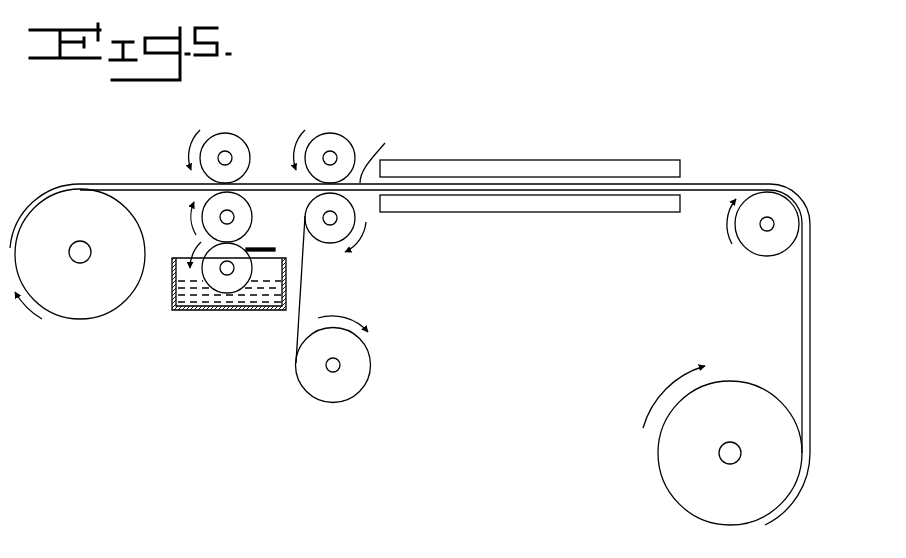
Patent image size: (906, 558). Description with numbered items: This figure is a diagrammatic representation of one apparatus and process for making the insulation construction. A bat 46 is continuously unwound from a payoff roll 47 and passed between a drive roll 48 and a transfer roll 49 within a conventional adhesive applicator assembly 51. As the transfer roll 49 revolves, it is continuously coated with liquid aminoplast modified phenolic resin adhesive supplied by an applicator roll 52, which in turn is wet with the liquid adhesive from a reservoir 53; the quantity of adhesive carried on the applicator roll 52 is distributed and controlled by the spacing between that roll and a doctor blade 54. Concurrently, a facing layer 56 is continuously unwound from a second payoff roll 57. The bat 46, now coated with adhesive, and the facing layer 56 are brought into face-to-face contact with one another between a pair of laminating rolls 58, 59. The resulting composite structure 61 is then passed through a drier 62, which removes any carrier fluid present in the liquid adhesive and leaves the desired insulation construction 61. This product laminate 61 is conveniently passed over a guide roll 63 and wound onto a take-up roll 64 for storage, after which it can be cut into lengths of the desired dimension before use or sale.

The bat 46 is at (135, 183).
The payoff roll 47 is at (97, 321).
The drive roll 48 is at (238, 136).
The transfer roll 49 is at (252, 216).
The adhesive applicator assembly 51 is at (188, 314).
The applicator roll 52 is at (207, 285).
The reservoir 53 is at (250, 300).
The doctor blade 54 is at (271, 249).
The facing layer 56 is at (302, 300).
The payoff roll 57 is at (372, 372).
The laminating roll 58 is at (326, 243).
The laminating roll 59 is at (337, 133).
The composite structure 61 is at (379, 153).
The drier 62 is at (502, 160).
The guide roll 63 is at (770, 256).
The take-up roll 64 is at (672, 494).